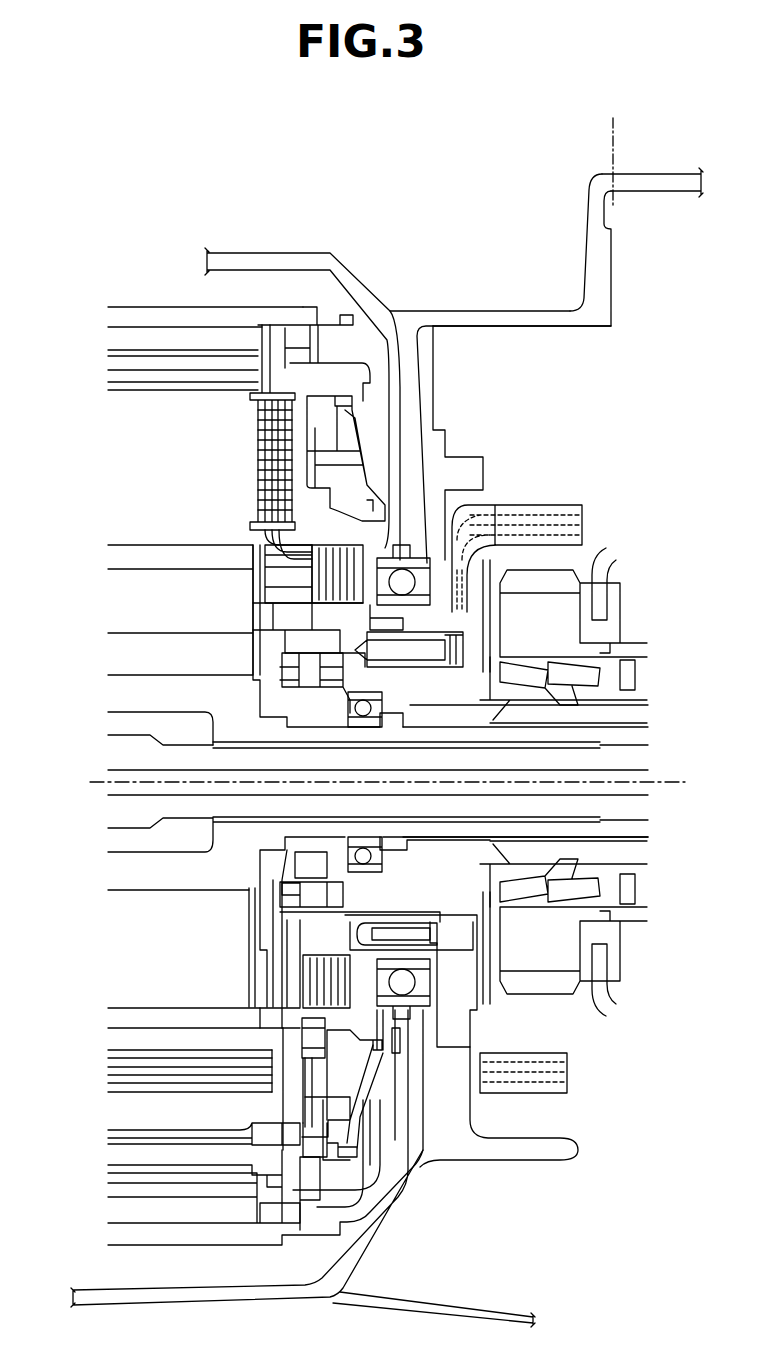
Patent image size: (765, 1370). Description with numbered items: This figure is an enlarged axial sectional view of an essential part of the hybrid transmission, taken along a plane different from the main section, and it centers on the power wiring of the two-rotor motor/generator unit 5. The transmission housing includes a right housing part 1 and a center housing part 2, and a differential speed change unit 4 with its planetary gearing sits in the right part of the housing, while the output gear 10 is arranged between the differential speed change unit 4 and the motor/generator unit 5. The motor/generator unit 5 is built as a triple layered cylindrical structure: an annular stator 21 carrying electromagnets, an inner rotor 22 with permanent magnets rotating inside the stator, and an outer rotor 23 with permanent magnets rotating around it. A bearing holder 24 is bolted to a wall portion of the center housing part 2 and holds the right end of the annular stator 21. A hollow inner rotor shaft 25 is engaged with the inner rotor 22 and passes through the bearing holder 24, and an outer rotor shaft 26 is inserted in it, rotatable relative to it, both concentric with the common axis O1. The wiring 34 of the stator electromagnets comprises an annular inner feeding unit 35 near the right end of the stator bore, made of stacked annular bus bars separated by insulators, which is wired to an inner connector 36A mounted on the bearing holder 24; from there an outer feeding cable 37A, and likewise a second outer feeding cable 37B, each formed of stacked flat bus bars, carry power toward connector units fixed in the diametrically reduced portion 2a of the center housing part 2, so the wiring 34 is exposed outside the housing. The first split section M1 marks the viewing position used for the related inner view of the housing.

The right housing part 1 is at (657, 172).
The center housing part 2 is at (262, 247).
The diametrically reduced portion 2a is at (437, 311).
The differential speed change unit 4 is at (598, 1020).
The motor/generator unit 5 is at (277, 305).
The output gear 10 is at (570, 577).
The annular stator 21 is at (135, 473).
The inner rotor 22 is at (141, 610).
The outer rotor 23 is at (136, 319).
The bearing holder 24 is at (417, 953).
The inner rotor shaft 25 is at (120, 870).
The outer rotor shaft 26 is at (117, 810).
The wiring 34 is at (535, 445).
The annular inner feeding unit 35 is at (335, 1015).
The inner connector 36A is at (493, 632).
The outer feeding cable 37A is at (553, 507).
The outer feeding cable 37B is at (527, 1093).
The first split section M1 is at (615, 152).
The common axis O1 is at (663, 782).